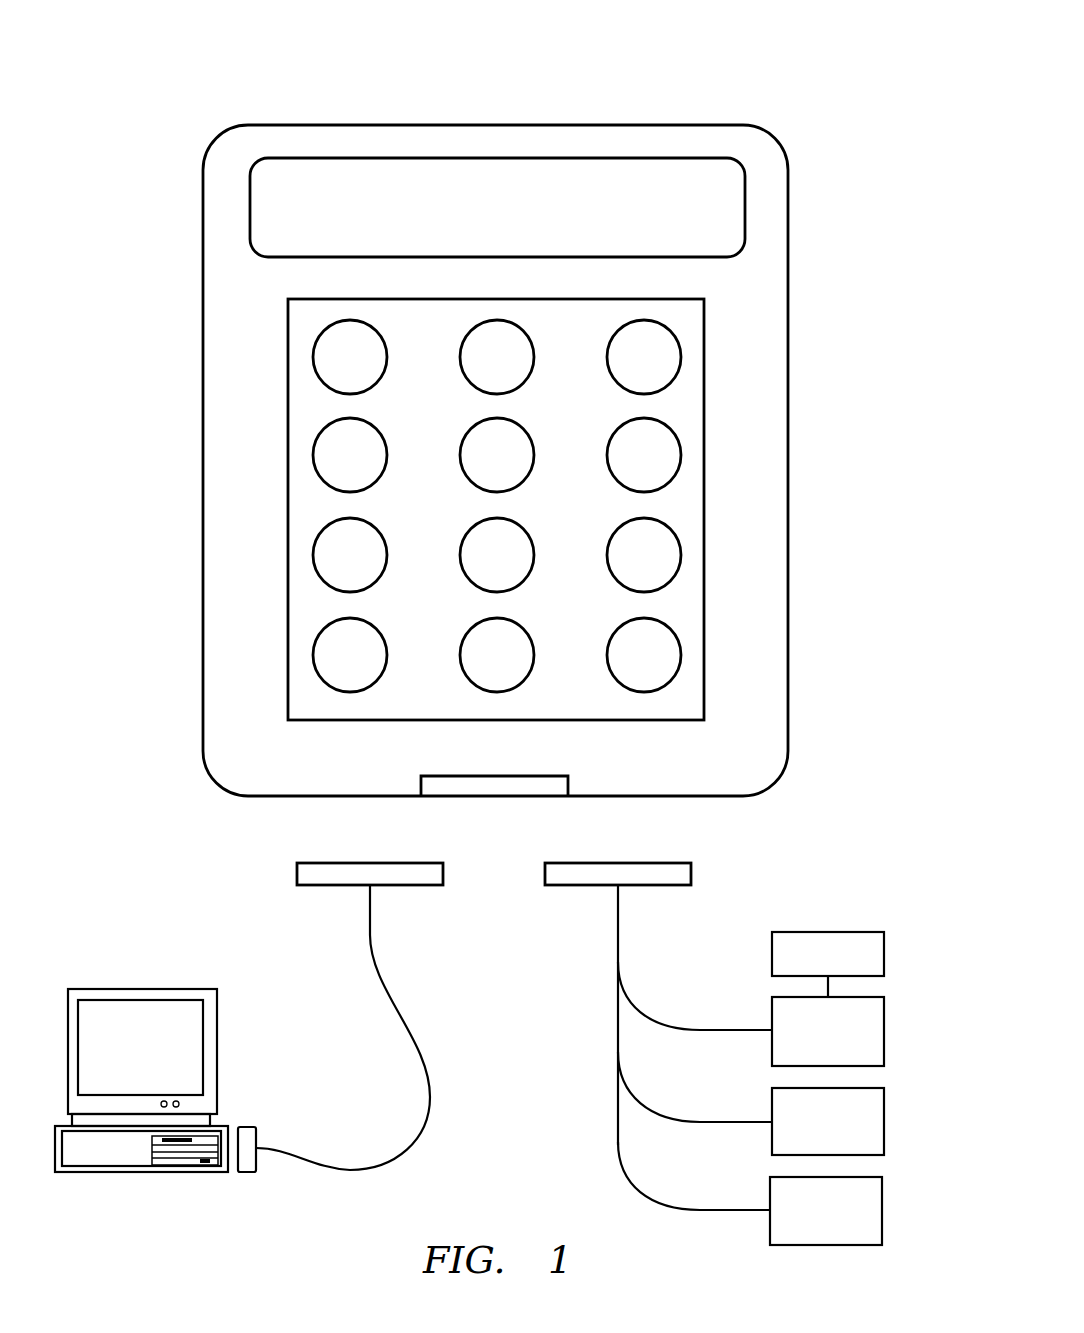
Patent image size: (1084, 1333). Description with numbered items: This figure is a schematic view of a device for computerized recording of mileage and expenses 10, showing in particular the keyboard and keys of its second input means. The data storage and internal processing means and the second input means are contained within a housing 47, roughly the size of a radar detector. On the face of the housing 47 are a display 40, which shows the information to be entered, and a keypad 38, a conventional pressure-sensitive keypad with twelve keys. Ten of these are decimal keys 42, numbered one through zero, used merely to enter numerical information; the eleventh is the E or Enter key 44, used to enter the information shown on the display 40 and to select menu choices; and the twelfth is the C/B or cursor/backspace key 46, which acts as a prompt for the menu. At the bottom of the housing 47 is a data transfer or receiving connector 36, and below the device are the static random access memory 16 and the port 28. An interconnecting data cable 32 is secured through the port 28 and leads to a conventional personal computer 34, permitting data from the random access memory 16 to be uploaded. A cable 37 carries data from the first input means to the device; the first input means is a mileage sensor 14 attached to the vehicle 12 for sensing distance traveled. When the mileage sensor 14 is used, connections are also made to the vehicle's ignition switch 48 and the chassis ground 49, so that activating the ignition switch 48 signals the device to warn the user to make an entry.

The device for computerized recording of mileage and expenses 10 is at (386, 57).
The vehicle 12 is at (884, 955).
The mileage sensor 14 is at (884, 1032).
The static random access memory 16 is at (618, 862).
The port 28 is at (370, 862).
The interconnecting data cable 32 is at (326, 1168).
The personal computer 34 is at (140, 989).
The data transfer or receiving connector 36 is at (447, 776).
The cable 37 is at (618, 1085).
The keypad 38 is at (704, 341).
The display 40 is at (484, 218).
The decimal keys 42 is at (313, 356).
The Enter key 44 is at (680, 655).
The cursor/backspace key 46 is at (313, 654).
The housing 47 is at (789, 460).
The ignition switch 48 is at (884, 1128).
The chassis ground 49 is at (882, 1218).